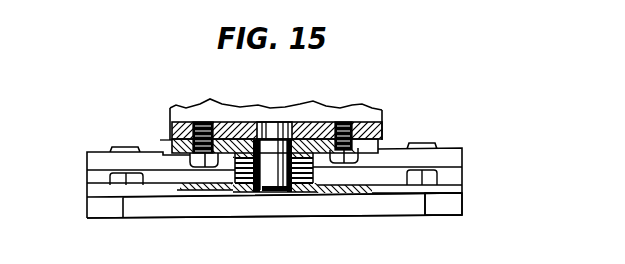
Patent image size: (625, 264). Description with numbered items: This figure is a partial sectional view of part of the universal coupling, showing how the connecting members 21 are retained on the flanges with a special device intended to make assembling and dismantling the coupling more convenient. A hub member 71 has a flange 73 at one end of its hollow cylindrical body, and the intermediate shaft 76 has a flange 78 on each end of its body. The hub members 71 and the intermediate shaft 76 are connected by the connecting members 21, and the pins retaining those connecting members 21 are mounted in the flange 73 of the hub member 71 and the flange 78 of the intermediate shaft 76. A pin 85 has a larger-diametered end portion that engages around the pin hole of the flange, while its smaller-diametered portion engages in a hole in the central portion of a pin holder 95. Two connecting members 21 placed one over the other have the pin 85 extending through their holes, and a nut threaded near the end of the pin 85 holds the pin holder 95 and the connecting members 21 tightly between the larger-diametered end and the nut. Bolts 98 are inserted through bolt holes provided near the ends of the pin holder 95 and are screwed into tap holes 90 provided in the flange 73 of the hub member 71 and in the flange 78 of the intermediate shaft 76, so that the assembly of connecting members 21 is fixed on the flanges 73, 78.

The connecting member 21 is at (92, 163).
The hub member 71 is at (425, 217).
The flange 73 is at (453, 205).
The intermediate shaft 76 is at (346, 106).
The flange 78 is at (376, 130).
The pin 85 is at (268, 122).
The tap hole 90 is at (200, 122).
The pin holder 95 is at (307, 137).
The bolt 98 is at (172, 137).